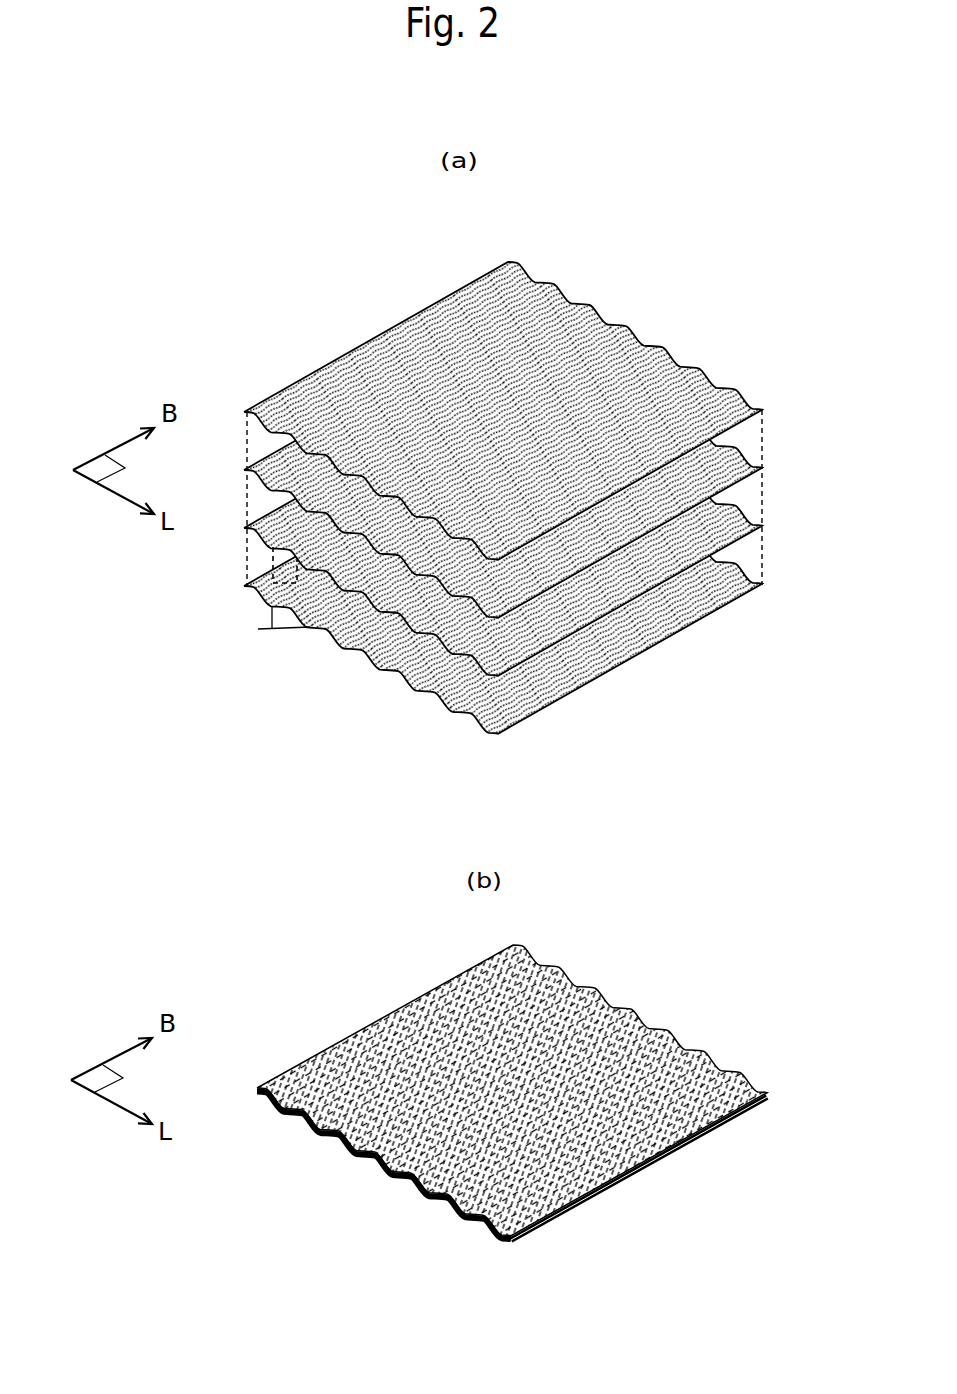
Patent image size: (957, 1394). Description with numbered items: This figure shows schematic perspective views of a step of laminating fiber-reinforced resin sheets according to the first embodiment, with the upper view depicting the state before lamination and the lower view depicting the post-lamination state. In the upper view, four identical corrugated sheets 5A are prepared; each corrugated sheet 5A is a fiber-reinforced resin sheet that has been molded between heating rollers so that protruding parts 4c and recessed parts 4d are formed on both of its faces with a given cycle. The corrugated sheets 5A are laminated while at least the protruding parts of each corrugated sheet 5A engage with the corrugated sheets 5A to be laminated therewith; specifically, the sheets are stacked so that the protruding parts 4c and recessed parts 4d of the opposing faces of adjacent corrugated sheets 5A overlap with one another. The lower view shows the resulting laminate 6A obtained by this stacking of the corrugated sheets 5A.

The corrugated sheet 5A is at (799, 571).
The protruding part 4c is at (264, 592).
The recessed part 4d is at (272, 628).
The laminate 6A is at (590, 1002).